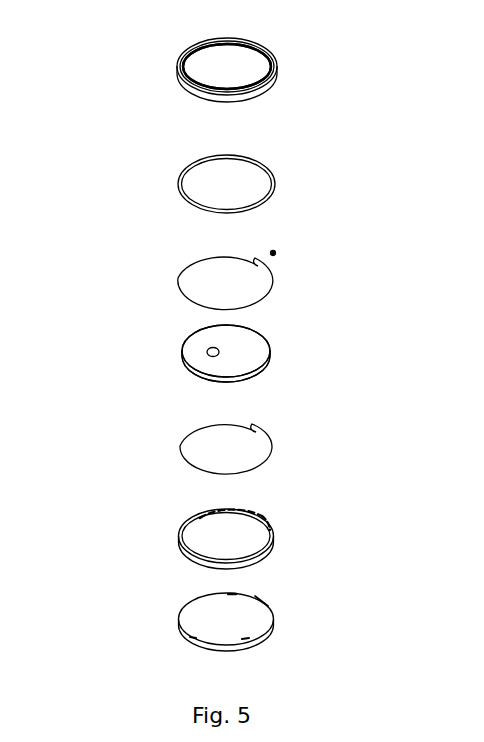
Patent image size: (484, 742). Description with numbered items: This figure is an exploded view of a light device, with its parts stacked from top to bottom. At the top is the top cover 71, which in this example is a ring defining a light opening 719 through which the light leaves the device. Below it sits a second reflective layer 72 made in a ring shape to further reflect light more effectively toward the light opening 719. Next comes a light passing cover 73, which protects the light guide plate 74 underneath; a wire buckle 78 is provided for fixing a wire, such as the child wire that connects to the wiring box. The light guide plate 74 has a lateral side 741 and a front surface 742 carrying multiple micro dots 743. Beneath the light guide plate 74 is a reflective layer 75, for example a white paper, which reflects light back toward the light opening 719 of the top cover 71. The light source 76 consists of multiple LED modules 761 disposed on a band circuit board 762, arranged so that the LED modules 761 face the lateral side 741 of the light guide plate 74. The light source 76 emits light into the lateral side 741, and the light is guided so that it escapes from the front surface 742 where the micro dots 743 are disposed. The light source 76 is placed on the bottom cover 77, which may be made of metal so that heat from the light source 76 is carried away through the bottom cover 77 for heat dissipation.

The top cover 71 is at (177, 67).
The light opening 719 is at (237, 60).
The second reflective layer 72 is at (178, 190).
The light passing cover 73 is at (178, 278).
The wire buckle 78 is at (271, 256).
The light guide plate 74 is at (182, 351).
The lateral side 741 is at (267, 363).
The front surface 742 is at (248, 342).
The micro dots 743 is at (209, 349).
The reflective layer 75 is at (180, 446).
The light source 76 is at (178, 535).
The LED modules 761 is at (237, 512).
The band circuit board 762 is at (273, 540).
The bottom cover 77 is at (200, 627).